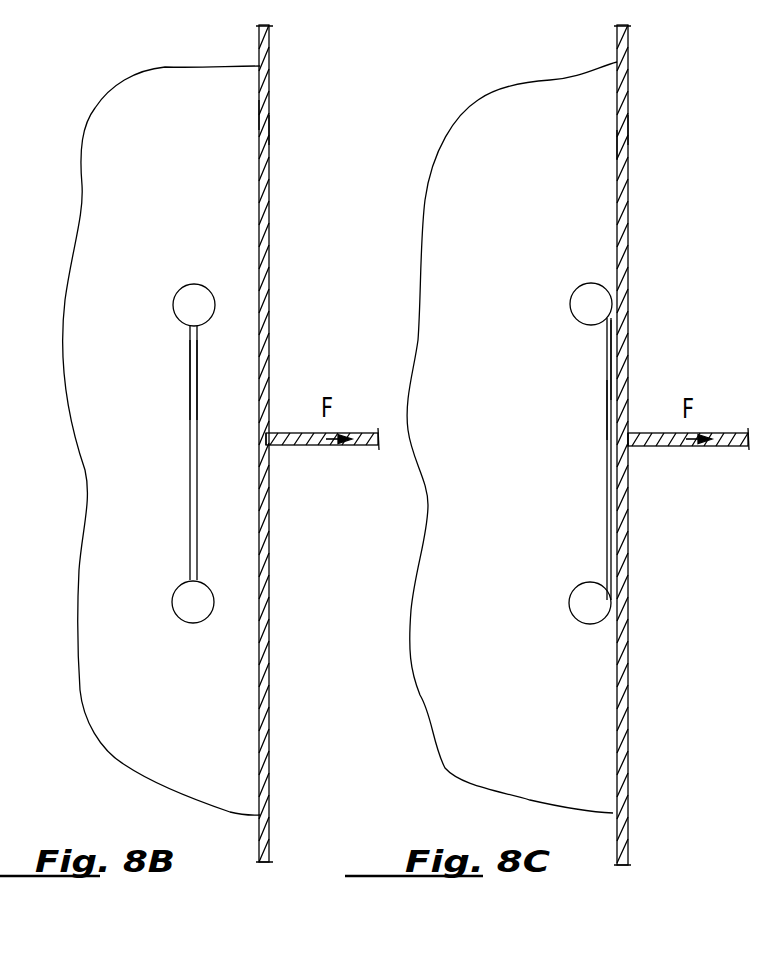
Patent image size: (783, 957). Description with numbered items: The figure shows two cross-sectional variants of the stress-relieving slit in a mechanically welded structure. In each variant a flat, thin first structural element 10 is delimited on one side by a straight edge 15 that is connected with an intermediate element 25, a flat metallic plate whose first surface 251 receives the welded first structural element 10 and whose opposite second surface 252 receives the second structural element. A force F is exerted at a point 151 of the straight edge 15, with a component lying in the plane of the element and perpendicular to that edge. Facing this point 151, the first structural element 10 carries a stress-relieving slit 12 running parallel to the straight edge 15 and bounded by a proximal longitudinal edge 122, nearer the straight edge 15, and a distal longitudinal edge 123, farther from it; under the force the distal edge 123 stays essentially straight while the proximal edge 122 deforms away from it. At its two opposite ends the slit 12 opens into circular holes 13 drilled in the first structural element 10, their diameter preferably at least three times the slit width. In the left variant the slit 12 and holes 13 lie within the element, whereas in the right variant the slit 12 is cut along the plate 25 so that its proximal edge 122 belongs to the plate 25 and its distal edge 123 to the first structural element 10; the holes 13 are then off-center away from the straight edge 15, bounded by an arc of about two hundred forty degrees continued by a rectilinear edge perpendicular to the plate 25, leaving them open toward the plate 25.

In FIG. 8B, the first structural element 10 is at (92, 610).
In FIG. 8C, the first structural element 10 is at (447, 236).
In FIG. 8B, the stress-relieving slit 12 is at (193, 482).
In FIG. 8C, the stress-relieving slit 12 is at (610, 430).
In FIG. 8B, the proximal longitudinal edge 122 is at (197, 372).
In FIG. 8C, the proximal longitudinal edge 122 is at (632, 320).
In FIG. 8B, the distal longitudinal edge 123 is at (190, 382).
In FIG. 8C, the distal longitudinal edge 123 is at (608, 405).
In FIG. 8B, the circular hole 13 is at (190, 296).
In FIG. 8C, the circular hole 13 is at (582, 312).
In FIG. 8B, the straight edge 15 is at (259, 200).
In FIG. 8C, the straight edge 15 is at (617, 212).
In FIG. 8B, the point of force application 151 is at (268, 437).
In FIG. 8C, the point of force application 151 is at (630, 447).
In FIG. 8B, the intermediate element 25 is at (268, 40).
In FIG. 8C, the intermediate element 25 is at (630, 63).
In FIG. 8B, the first surface 251 is at (260, 114).
In FIG. 8C, the first surface 251 is at (617, 145).
In FIG. 8B, the second surface 252 is at (272, 131).
In FIG. 8C, the second surface 252 is at (630, 130).